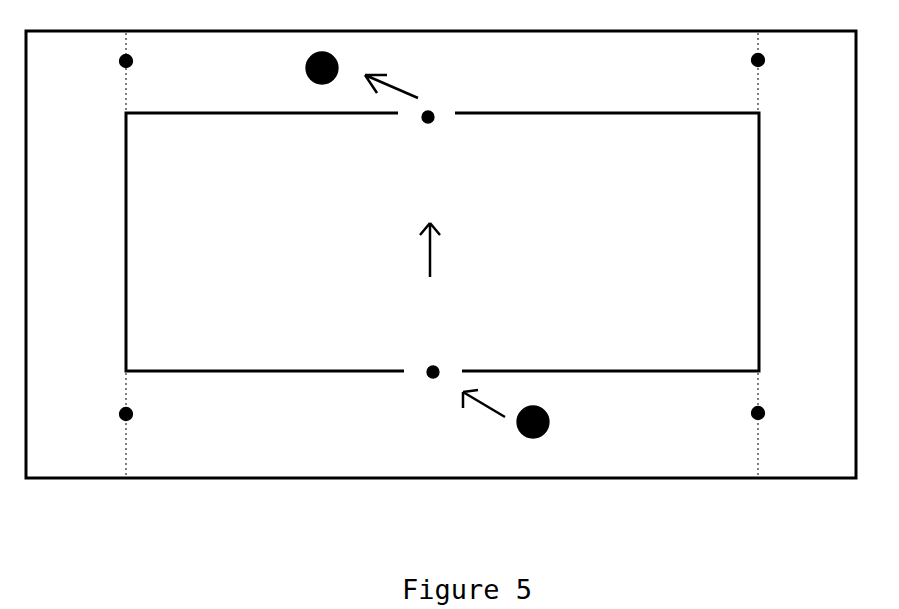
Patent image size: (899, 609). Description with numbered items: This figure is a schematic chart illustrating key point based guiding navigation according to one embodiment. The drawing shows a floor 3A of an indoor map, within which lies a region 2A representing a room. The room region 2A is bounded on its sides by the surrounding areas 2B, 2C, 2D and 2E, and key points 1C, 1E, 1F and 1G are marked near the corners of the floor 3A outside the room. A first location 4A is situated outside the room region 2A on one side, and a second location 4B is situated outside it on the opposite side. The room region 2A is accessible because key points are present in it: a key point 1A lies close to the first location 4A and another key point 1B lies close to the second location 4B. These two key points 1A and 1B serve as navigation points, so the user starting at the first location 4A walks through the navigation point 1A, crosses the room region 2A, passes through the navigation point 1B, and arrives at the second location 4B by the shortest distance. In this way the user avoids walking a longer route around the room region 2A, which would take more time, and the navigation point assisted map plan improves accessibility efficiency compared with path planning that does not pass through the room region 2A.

The key point 1A is at (428, 393).
The key point 1B is at (439, 135).
The upper left corner hole 1C is at (130, 72).
The lower left corner hole 1E is at (129, 424).
The lower right corner hole 1F is at (762, 424).
The upper right corner hole 1G is at (757, 72).
The region 2A is at (442, 242).
The left border region 2B is at (80, 274).
The bottom border region 2C is at (280, 442).
The right border region 2D is at (805, 266).
The top border region 2E is at (442, 66).
The floor 3A is at (626, 478).
The first location 4A is at (526, 420).
The second location 4B is at (350, 79).